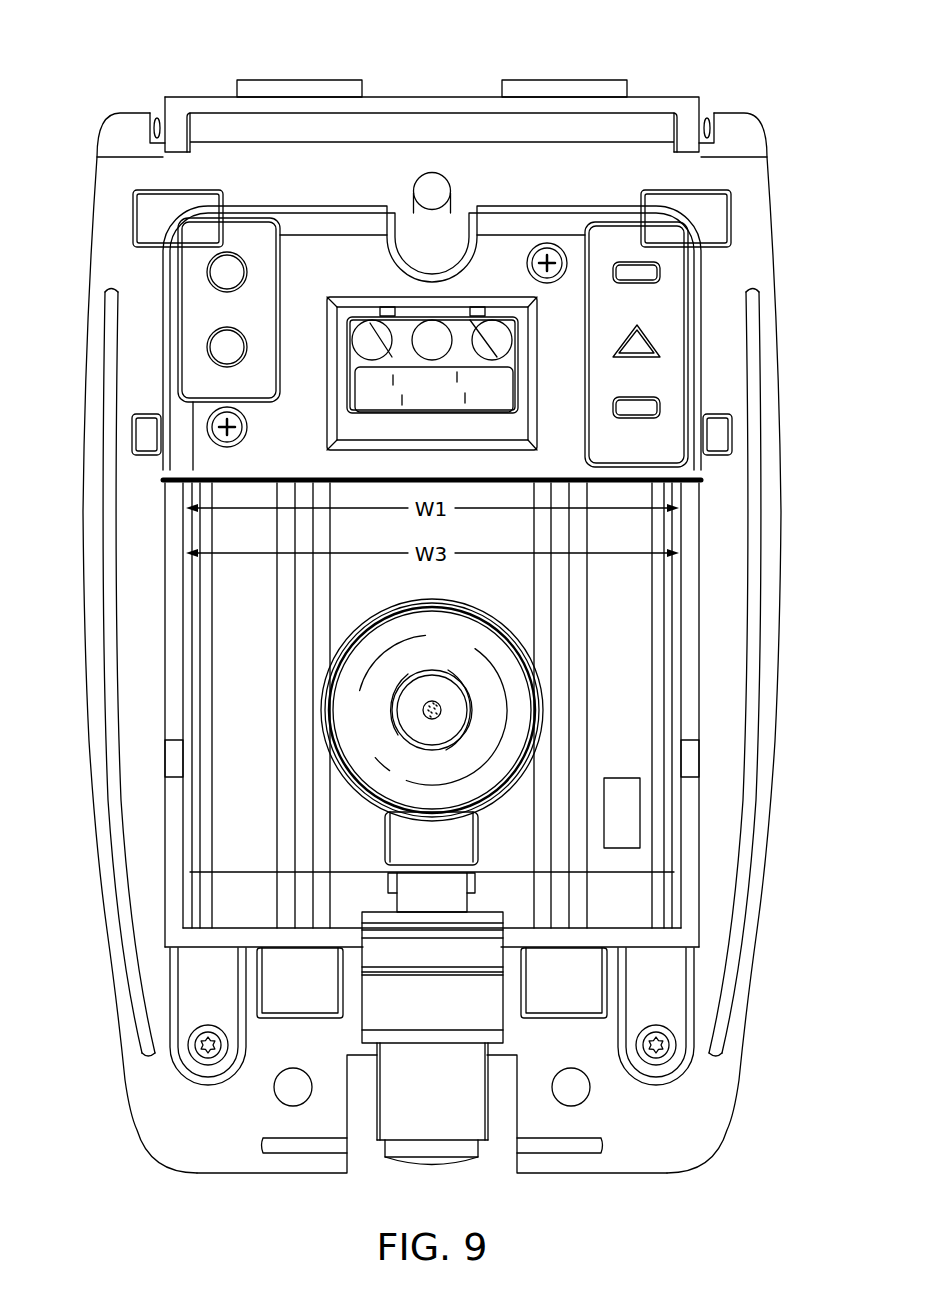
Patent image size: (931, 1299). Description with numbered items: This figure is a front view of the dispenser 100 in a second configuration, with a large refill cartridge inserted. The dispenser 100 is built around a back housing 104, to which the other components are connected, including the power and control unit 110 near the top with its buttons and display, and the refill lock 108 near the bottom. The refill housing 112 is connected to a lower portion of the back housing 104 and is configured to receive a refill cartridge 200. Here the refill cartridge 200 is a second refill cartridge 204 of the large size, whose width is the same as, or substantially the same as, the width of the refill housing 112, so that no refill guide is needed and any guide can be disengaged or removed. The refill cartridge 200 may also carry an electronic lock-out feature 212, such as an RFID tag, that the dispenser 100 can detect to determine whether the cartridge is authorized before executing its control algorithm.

The dispenser 100 is at (232, 54).
The back housing 104 is at (125, 1080).
The refill lock 108 is at (492, 1015).
The power and control unit 110 is at (190, 281).
The refill housing 112 is at (171, 673).
The refill cartridge 200 is at (687, 616).
The second refill cartridge 204 is at (680, 670).
The electronic lock-out feature 212 is at (640, 815).